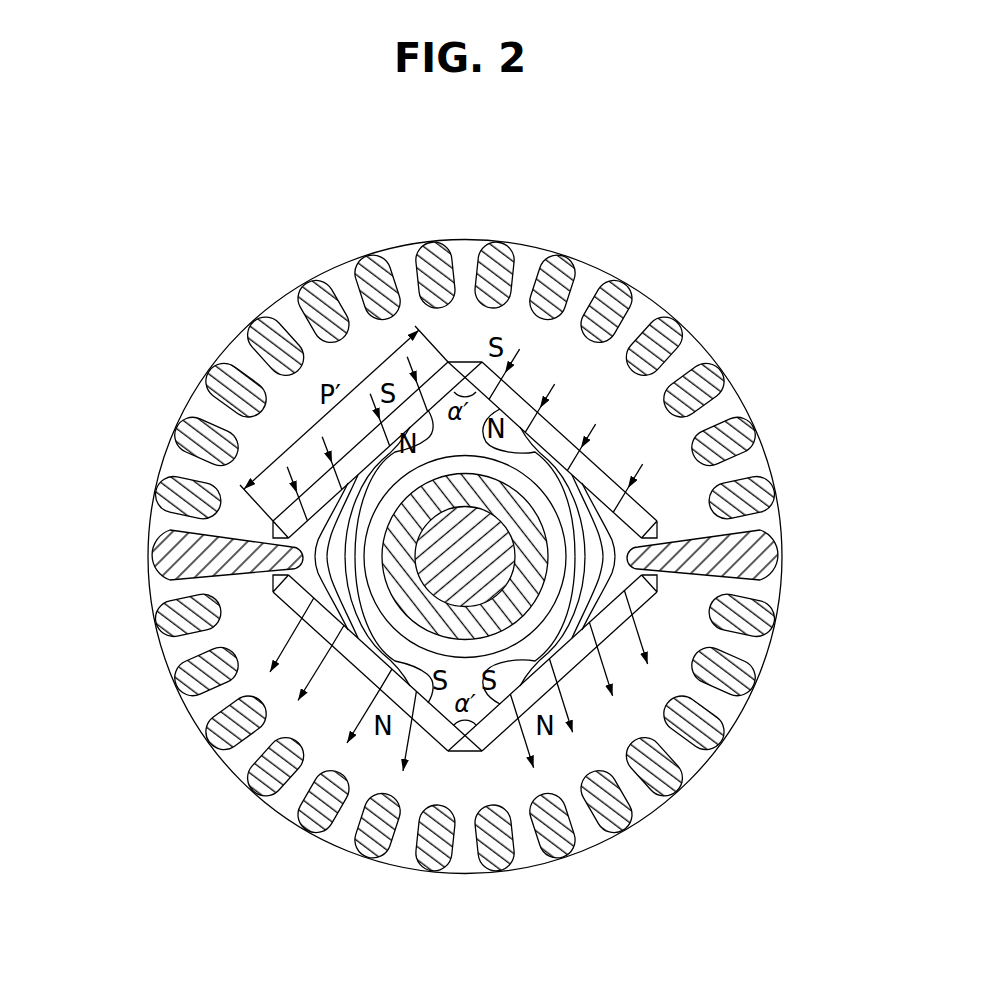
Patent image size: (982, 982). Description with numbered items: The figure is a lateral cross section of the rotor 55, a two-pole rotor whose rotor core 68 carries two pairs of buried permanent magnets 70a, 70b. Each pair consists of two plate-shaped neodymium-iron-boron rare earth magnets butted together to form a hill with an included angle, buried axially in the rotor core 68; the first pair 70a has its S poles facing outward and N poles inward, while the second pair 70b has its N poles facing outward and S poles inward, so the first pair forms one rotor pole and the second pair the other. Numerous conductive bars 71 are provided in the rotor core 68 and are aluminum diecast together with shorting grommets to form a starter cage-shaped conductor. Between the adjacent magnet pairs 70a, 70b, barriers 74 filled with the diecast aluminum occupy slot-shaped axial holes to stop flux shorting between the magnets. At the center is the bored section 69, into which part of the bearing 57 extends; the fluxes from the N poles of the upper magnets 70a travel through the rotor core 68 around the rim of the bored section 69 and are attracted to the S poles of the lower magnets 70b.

The rotor 55 is at (287, 290).
The rotor core 68 is at (392, 322).
The bored section 69 is at (490, 466).
The first pair of permanent magnets 70a is at (342, 486).
The second pair of permanent magnets 70b is at (358, 656).
The conductive bars 71 is at (770, 482).
The barriers 74 is at (178, 549).
The bearing 57 is at (528, 566).